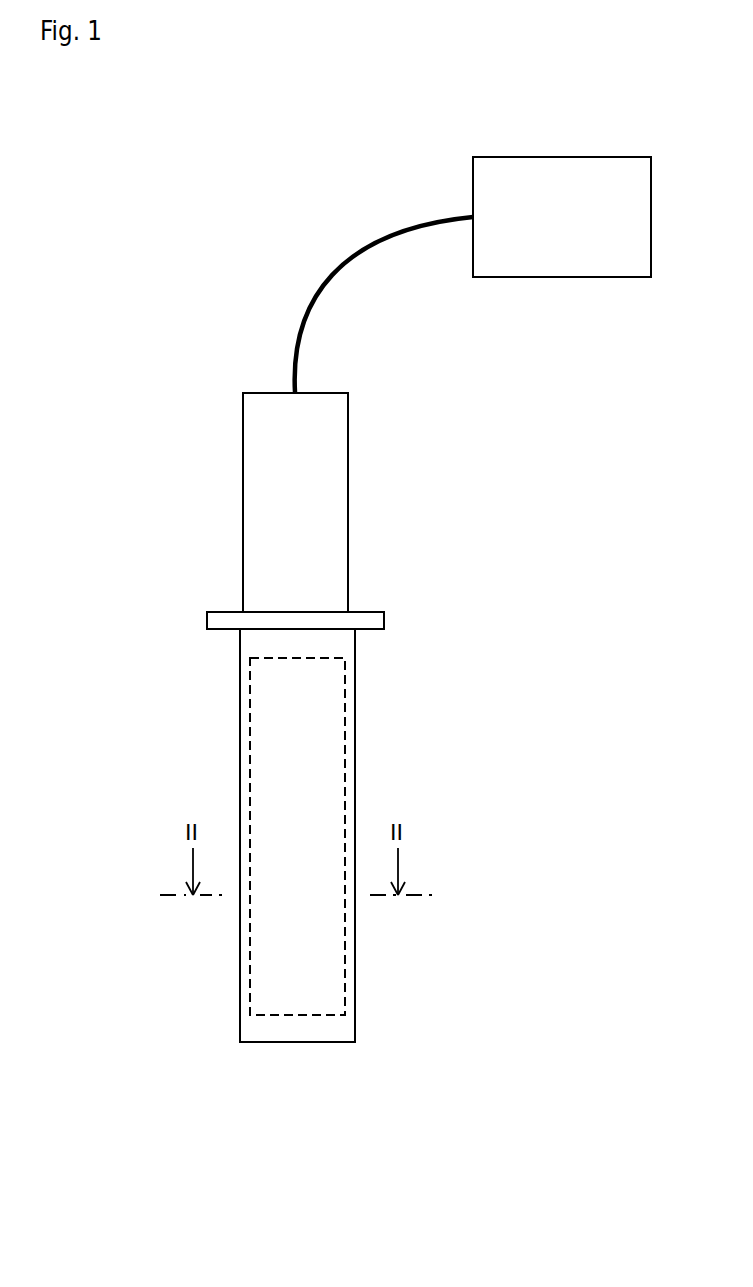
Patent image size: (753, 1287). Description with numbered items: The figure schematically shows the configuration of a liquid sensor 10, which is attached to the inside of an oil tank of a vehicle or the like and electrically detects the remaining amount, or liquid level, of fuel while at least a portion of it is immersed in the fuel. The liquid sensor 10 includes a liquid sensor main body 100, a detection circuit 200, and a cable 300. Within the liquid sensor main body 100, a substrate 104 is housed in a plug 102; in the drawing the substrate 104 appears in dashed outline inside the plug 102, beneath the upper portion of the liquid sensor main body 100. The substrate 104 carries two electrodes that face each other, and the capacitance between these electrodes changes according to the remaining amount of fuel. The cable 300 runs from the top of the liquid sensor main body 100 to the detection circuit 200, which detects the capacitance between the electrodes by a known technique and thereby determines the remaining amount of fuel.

The liquid sensor 10 is at (302, 807).
The liquid sensor main body 100 is at (350, 492).
The plug 102 is at (240, 725).
The substrate 104 is at (345, 770).
The detection circuit 200 is at (597, 277).
The cable 300 is at (336, 270).